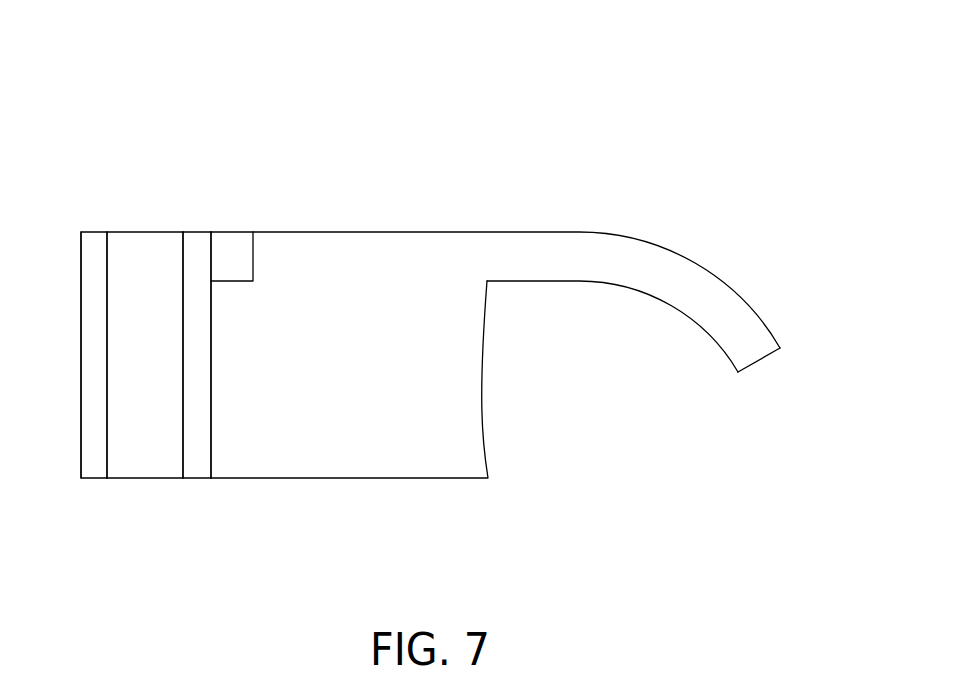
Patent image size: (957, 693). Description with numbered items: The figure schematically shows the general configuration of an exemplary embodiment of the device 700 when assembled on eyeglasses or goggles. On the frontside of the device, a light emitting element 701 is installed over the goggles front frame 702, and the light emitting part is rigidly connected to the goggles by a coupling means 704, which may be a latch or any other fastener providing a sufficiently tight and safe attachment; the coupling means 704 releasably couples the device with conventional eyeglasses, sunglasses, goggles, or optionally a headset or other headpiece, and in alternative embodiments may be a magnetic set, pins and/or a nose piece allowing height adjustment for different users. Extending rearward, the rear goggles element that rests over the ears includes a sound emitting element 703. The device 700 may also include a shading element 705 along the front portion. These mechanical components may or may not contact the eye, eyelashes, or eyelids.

The device 700 is at (373, 387).
The light emitting element 701 is at (96, 462).
The goggles front frame 702 is at (153, 462).
The sound emitting element 703 is at (760, 362).
The coupling means 704 is at (167, 243).
The shading element 705 is at (448, 300).